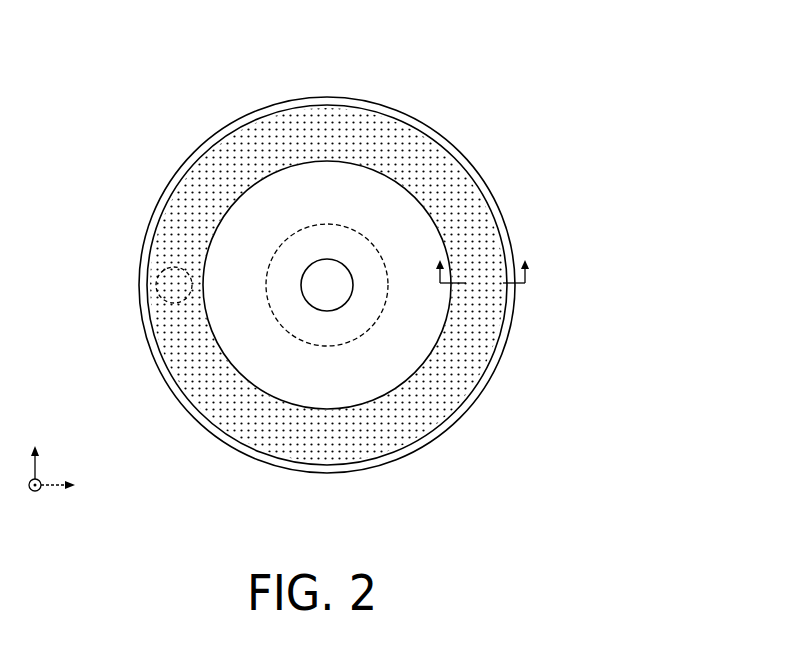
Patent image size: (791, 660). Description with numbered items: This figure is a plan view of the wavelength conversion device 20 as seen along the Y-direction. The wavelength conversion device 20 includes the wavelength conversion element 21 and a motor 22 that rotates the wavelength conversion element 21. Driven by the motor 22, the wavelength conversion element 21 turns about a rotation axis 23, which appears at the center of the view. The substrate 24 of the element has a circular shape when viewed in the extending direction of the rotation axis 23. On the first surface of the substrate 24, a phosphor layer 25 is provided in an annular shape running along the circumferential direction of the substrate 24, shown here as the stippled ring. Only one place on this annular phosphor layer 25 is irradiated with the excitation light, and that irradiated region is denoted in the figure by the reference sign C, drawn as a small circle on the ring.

The wavelength conversion device 20 is at (200, 127).
The wavelength conversion element 21 is at (410, 100).
The motor 22 is at (350, 327).
The rotation axis 23 is at (311, 289).
The substrate 24 is at (388, 203).
The phosphor layer 25 is at (482, 340).
The region irradiated with excitation light C is at (156, 289).